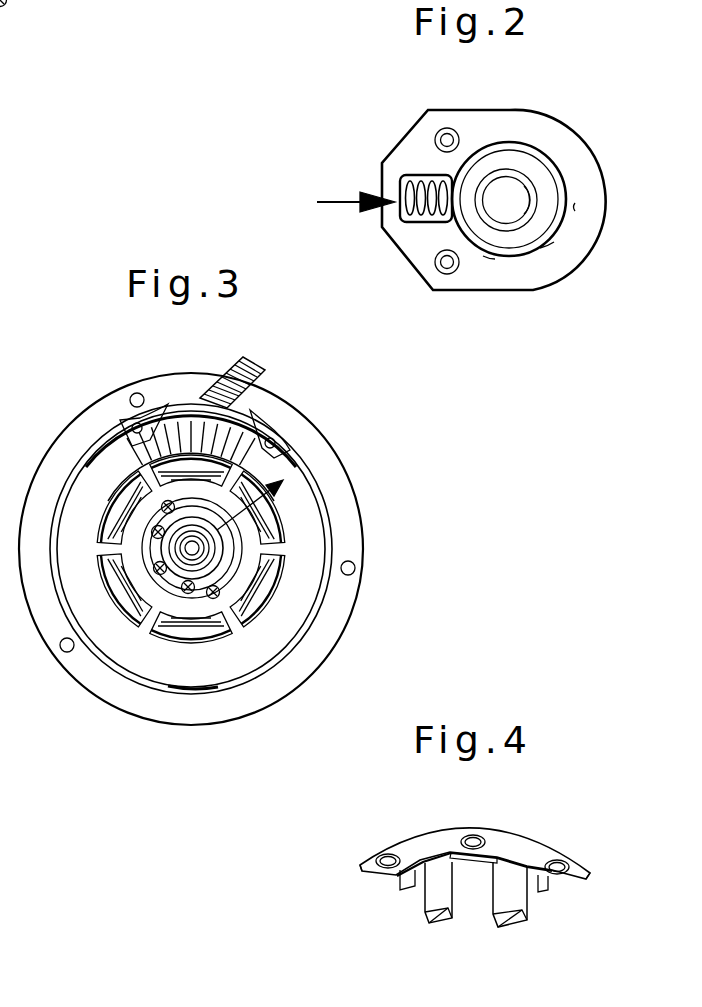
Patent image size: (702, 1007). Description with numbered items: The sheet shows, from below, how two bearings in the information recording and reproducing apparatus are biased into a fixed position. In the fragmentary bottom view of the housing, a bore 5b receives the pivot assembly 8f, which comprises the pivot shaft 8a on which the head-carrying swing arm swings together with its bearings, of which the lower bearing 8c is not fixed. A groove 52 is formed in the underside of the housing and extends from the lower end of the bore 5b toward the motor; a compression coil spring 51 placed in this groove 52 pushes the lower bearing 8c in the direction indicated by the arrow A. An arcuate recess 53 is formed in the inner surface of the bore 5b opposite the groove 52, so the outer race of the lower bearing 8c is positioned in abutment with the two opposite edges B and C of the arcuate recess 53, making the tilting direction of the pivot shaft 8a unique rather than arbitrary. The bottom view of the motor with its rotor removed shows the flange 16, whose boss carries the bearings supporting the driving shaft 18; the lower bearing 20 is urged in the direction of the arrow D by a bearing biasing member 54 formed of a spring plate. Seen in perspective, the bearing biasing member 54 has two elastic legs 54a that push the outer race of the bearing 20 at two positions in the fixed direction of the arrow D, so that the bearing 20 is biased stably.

In FIG. 2, the bore 5b is at (483, 256).
In FIG. 2, the pivot shaft 8a is at (504, 215).
In FIG. 2, the lower bearing 8c is at (528, 240).
In FIG. 2, the pivot assembly 8f is at (485, 143).
In FIG. 3, the flange 16 is at (352, 547).
In FIG. 3, the driving shaft 18 is at (210, 558).
In FIG. 3, the lower bearing 20 is at (181, 572).
In FIG. 2, the compression coil spring 51 is at (405, 223).
In FIG. 2, the groove 52 is at (419, 224).
In FIG. 2, the arcuate recess 53 is at (578, 207).
In FIG. 3, the bearing biasing member 54 is at (168, 580).
In FIG. 4, the bearing biasing member 54 is at (528, 843).
In FIG. 4, the elastic legs 54a is at (432, 893).
In FIG. 2, the arrow A is at (335, 193).
In FIG. 2, the edge of arcuate recess B is at (548, 160).
In FIG. 2, the edge of arcuate recess C is at (555, 245).
In FIG. 3, the arrow D is at (280, 502).